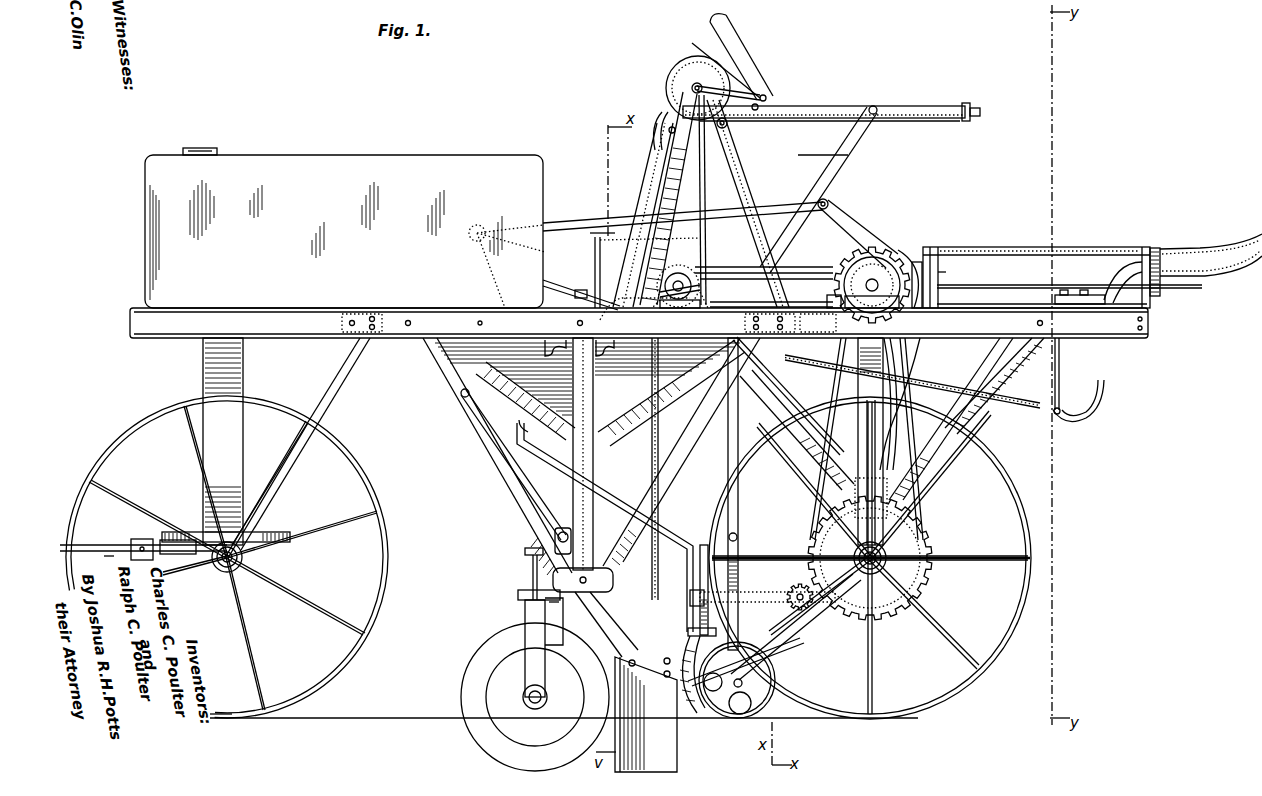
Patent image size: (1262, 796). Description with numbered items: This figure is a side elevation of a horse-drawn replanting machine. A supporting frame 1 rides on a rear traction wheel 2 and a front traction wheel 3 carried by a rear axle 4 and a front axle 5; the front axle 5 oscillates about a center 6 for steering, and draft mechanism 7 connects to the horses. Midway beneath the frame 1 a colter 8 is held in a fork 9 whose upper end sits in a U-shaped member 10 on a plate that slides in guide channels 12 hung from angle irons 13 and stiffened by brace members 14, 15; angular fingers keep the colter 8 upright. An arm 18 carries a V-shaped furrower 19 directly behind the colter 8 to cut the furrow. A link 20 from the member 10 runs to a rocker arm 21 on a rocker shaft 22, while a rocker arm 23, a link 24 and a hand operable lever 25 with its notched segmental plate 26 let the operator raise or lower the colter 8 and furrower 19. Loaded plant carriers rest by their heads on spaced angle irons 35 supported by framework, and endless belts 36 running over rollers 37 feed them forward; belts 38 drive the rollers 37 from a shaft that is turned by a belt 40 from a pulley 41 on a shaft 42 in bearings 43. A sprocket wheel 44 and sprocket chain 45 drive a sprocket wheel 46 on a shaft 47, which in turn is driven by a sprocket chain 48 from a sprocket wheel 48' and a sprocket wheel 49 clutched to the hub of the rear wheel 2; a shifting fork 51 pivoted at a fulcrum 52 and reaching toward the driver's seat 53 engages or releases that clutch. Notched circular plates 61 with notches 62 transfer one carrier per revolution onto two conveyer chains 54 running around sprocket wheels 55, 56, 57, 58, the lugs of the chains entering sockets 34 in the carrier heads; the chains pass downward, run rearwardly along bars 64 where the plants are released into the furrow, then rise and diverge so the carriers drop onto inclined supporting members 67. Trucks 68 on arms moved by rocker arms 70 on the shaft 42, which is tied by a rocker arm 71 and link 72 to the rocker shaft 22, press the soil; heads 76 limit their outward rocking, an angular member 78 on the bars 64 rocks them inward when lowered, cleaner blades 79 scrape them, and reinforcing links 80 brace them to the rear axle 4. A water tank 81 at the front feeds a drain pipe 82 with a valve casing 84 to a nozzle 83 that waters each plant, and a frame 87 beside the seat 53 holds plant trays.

The supporting frame 1 is at (290, 337).
The rear traction wheel 2 is at (1015, 505).
The front traction wheel 3 is at (375, 583).
The rear axle 4 is at (890, 568).
The front axle 5 is at (246, 558).
The center 6 is at (258, 508).
The draft mechanism 7 is at (92, 545).
The colter 8 is at (462, 672).
The fork 9 is at (524, 618).
The U-shaped member 10 is at (520, 600).
The guide channels 12 is at (592, 398).
The angle irons 13 is at (587, 377).
The brace member 14 is at (572, 380).
The brace member 15 is at (488, 455).
The arm 18 is at (598, 620).
The furrower 19 is at (660, 748).
The link 20 is at (490, 440).
The rocker arm 21 is at (478, 318).
The rocker shaft 22 is at (588, 290).
The rocker arm 23 is at (470, 238).
The link 24 is at (578, 224).
The hand operable lever 25 is at (836, 157).
The notched segmental plate 26 is at (878, 250).
The sockets 34 is at (690, 86).
The angle irons 35 is at (815, 108).
The endless belts 36 is at (930, 122).
The rollers 37 is at (728, 126).
The belts 38 is at (756, 95).
The belt 40 is at (665, 232).
The pulley 41 is at (678, 265).
The shaft 42 is at (695, 285).
The bearings 43 is at (672, 312).
The sprocket wheel 44 is at (764, 260).
The sprocket chain 45 is at (795, 278).
The sprocket wheel 46 is at (953, 272).
The shaft 47 is at (830, 291).
The sprocket chain 48 is at (912, 419).
The sprocket wheel 48' is at (913, 263).
The sprocket wheel 49 is at (910, 540).
The shifting fork 51 is at (922, 361).
The fulcrum 52 is at (866, 439).
The driver's seat 53 is at (1185, 249).
The conveyer chains 54 is at (872, 236).
The sprocket wheels 55 is at (920, 268).
The sprocket wheels 56 is at (652, 138).
The sprocket wheels 57 is at (698, 570).
The sprocket wheels 58 is at (795, 590).
The circular plates 61 is at (680, 62).
The notches 62 is at (700, 158).
The bars 64 is at (650, 560).
The supporting members 67 is at (1042, 398).
The trucks 68 is at (728, 718).
The rocker arms 70 is at (702, 304).
The rocker arm 71 is at (645, 290).
The link 72 is at (565, 286).
The heads 76 is at (740, 537).
The angular member 78 is at (748, 564).
The cleaner blades 79 is at (780, 672).
The reinforcing links 80 is at (822, 628).
The water tank 81 is at (464, 165).
The drain pipe 82 is at (553, 462).
The nozzle 83 is at (686, 632).
The valve casing 84 is at (706, 591).
The frame 87 is at (1070, 247).